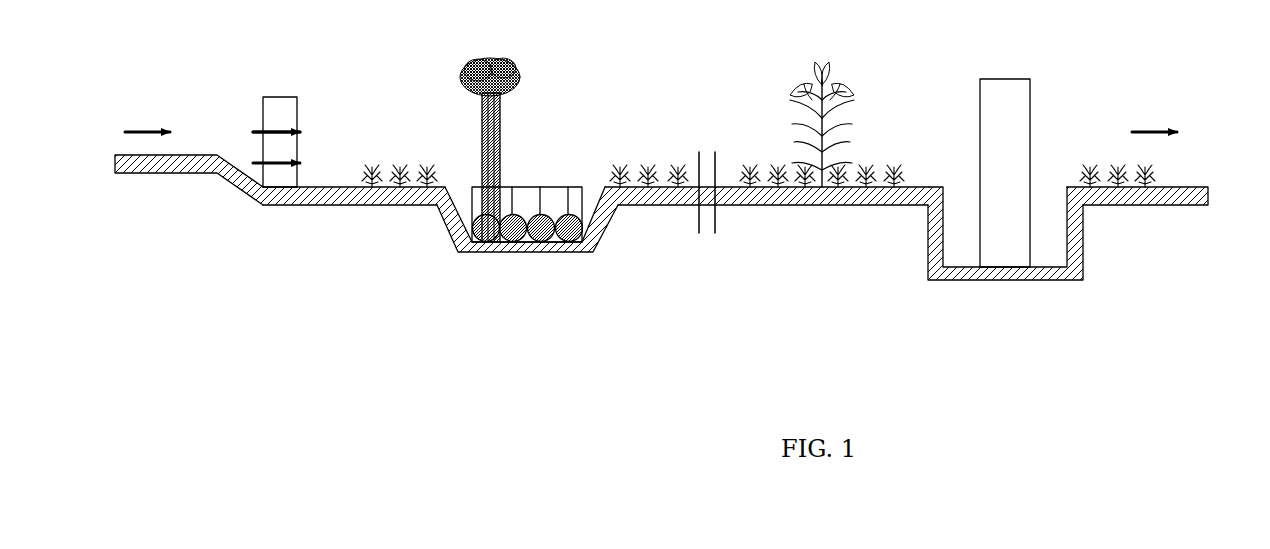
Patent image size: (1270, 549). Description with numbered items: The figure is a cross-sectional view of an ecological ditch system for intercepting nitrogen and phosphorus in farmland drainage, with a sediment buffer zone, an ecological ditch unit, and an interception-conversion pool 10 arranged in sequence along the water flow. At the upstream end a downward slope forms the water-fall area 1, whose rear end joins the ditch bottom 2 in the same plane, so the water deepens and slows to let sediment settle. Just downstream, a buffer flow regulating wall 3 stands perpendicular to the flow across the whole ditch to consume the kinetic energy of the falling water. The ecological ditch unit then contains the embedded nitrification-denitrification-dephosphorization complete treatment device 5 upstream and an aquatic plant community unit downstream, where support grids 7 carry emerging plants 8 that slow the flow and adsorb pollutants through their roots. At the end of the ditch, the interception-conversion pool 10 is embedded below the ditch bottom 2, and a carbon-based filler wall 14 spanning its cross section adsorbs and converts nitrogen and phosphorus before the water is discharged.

The water-fall area 1 is at (229, 162).
The ditch bottom 2 is at (1200, 186).
The buffer flow regulating wall 3 is at (262, 93).
The embedded nitrification-denitrification-dephosphorization complete treatment devi 5 is at (471, 185).
The support grid 7 is at (808, 92).
The emerging plant 8 is at (780, 165).
The interception-conversion pool 10 is at (938, 185).
The carbon-based filler wall 14 is at (1002, 76).